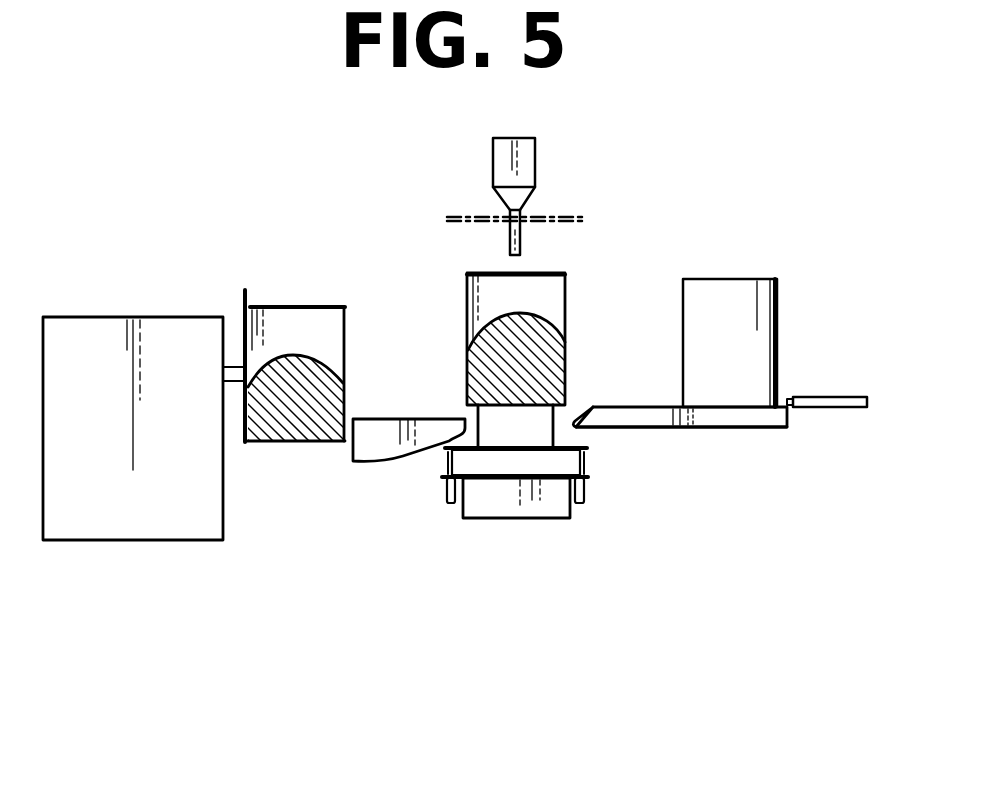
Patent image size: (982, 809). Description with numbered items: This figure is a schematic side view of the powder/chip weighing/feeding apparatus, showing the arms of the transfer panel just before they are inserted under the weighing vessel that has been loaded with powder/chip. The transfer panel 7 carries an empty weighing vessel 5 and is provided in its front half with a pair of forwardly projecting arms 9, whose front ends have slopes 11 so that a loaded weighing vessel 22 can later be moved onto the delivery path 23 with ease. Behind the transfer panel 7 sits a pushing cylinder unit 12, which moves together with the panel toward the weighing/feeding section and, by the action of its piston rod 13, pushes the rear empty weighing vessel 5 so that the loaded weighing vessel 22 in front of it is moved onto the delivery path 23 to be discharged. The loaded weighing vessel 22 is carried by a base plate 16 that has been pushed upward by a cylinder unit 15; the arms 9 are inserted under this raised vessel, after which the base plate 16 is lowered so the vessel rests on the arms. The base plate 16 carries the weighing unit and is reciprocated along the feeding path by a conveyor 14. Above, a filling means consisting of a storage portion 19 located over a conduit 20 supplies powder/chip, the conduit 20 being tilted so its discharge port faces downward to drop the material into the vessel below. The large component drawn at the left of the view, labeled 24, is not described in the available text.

The empty weighing vessel 5 is at (700, 293).
The transfer panel 7 is at (743, 431).
The arms 9 is at (645, 410).
The slopes 11 is at (580, 422).
The pushing cylinder unit 12 is at (827, 402).
The piston rod 13 is at (543, 430).
The conveyor 14 is at (514, 503).
The cylinder unit 15 is at (585, 492).
The base plate 16 is at (468, 460).
The storage portion 19 is at (523, 157).
The conduit 20 is at (518, 227).
The loaded weighing vessel 22 is at (465, 293).
The delivery path 23 is at (352, 452).
The tank 24 is at (183, 330).